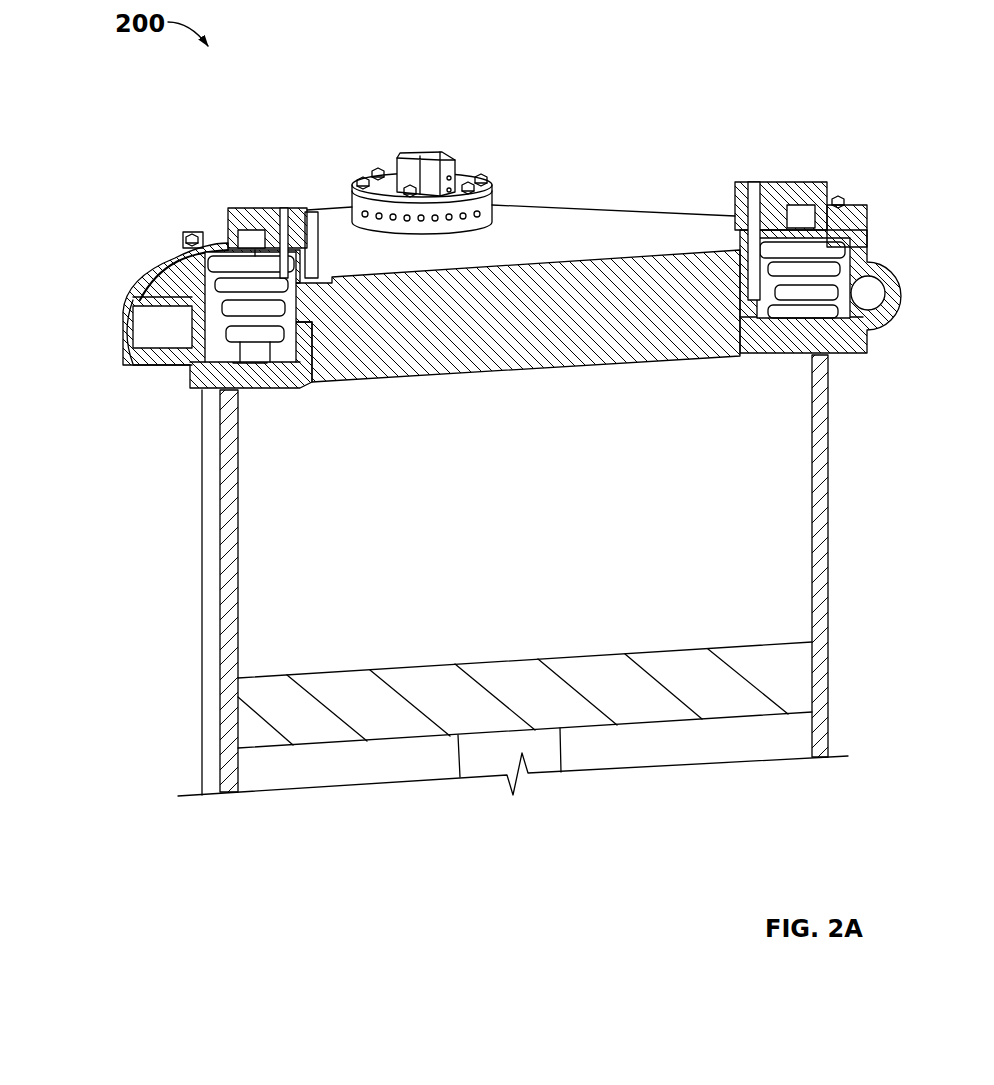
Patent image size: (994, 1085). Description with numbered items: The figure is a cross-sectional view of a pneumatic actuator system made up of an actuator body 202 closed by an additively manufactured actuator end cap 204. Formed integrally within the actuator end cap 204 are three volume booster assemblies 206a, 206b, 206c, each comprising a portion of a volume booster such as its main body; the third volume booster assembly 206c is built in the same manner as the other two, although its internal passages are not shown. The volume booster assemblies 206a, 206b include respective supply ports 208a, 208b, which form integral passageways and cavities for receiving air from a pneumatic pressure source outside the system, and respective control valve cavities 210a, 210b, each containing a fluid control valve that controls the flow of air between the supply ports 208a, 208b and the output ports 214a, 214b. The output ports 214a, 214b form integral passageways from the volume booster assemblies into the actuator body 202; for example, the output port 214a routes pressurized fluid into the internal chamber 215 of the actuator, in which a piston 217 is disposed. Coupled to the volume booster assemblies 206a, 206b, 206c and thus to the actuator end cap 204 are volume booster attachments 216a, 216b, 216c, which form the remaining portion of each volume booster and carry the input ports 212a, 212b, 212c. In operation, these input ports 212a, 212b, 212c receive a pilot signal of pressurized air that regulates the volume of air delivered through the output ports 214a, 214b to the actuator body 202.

The actuator body 202 is at (826, 558).
The actuator end cap 204 is at (398, 384).
The volume booster assembly 206a is at (100, 320).
The volume booster assembly 206b is at (899, 264).
The volume booster assembly 206c is at (548, 224).
The supply port 208a is at (127, 347).
The supply port 208b is at (900, 313).
The control valve cavity 210a is at (300, 310).
The control valve cavity 210b is at (753, 280).
The input port 212a is at (280, 210).
The input port 212b is at (765, 182).
The input port 212c is at (440, 162).
The output port 214a is at (302, 384).
The output port 214b is at (752, 353).
The internal chamber 215 is at (648, 521).
The volume booster attachment 216a is at (288, 147).
The volume booster attachment 216b is at (855, 191).
The volume booster attachment 216c is at (462, 142).
The piston 217 is at (588, 655).